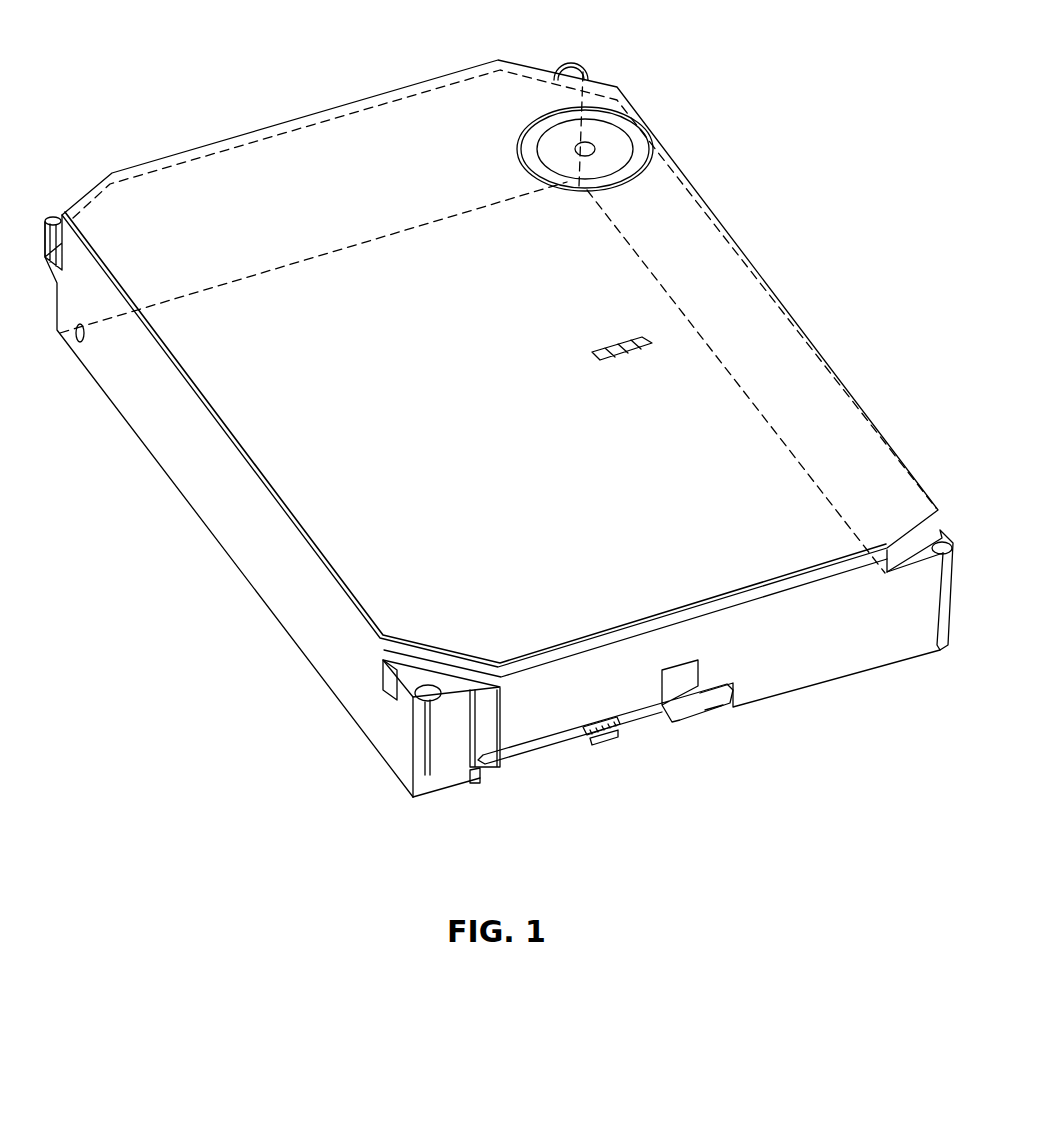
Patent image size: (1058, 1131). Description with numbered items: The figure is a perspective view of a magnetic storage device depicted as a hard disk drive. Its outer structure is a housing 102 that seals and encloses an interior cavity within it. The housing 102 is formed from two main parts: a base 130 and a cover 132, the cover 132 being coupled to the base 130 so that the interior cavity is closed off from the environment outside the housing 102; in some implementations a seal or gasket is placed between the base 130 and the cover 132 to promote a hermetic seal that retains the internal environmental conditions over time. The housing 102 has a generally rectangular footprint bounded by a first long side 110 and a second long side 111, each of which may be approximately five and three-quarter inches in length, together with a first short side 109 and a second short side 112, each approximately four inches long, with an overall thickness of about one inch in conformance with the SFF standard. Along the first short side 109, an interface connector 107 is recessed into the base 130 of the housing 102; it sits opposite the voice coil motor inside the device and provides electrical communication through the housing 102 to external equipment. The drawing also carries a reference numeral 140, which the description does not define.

The housing 102 is at (890, 663).
The interface connector 107 is at (540, 757).
The first short side 109 is at (807, 655).
The first long side 110 is at (243, 525).
The second long side 111 is at (673, 245).
The second short side 112 is at (340, 162).
The base 130 is at (183, 447).
The cover 132 is at (483, 93).
The cover 140 is at (155, 350).